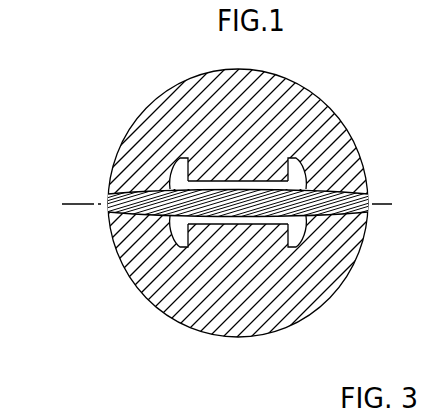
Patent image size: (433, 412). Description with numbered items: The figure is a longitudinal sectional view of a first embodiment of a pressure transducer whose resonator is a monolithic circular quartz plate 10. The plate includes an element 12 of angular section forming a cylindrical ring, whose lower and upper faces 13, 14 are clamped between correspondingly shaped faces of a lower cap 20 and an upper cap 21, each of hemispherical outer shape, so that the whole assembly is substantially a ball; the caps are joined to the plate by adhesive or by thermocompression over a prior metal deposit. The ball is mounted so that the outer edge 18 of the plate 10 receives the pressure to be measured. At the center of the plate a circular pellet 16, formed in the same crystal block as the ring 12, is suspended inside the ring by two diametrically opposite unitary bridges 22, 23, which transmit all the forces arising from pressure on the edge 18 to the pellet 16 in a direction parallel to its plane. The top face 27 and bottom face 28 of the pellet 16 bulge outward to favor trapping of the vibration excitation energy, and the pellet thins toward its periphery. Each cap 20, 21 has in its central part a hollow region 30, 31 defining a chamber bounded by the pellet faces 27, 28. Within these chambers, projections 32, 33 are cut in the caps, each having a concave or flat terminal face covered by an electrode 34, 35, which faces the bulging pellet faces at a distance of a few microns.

The monolithic circular quartz plate 10 is at (112, 218).
The element of angular section 12 is at (355, 192).
The lower face 13 is at (122, 252).
The upper face 14 is at (132, 156).
The circular pellet 16 is at (298, 250).
The outer edge 18 is at (107, 193).
The lower cap 20 is at (216, 203).
The upper cap 21 is at (265, 103).
The bridge 22 is at (143, 238).
The bridge 23 is at (364, 238).
The top face 27 is at (178, 160).
The bottom face 28 is at (252, 336).
The hollow region 30 is at (331, 288).
The hollow region 31 is at (300, 157).
The projection 32 is at (179, 250).
The projection 33 is at (140, 190).
The electrode 34 is at (254, 242).
The electrode 35 is at (220, 188).